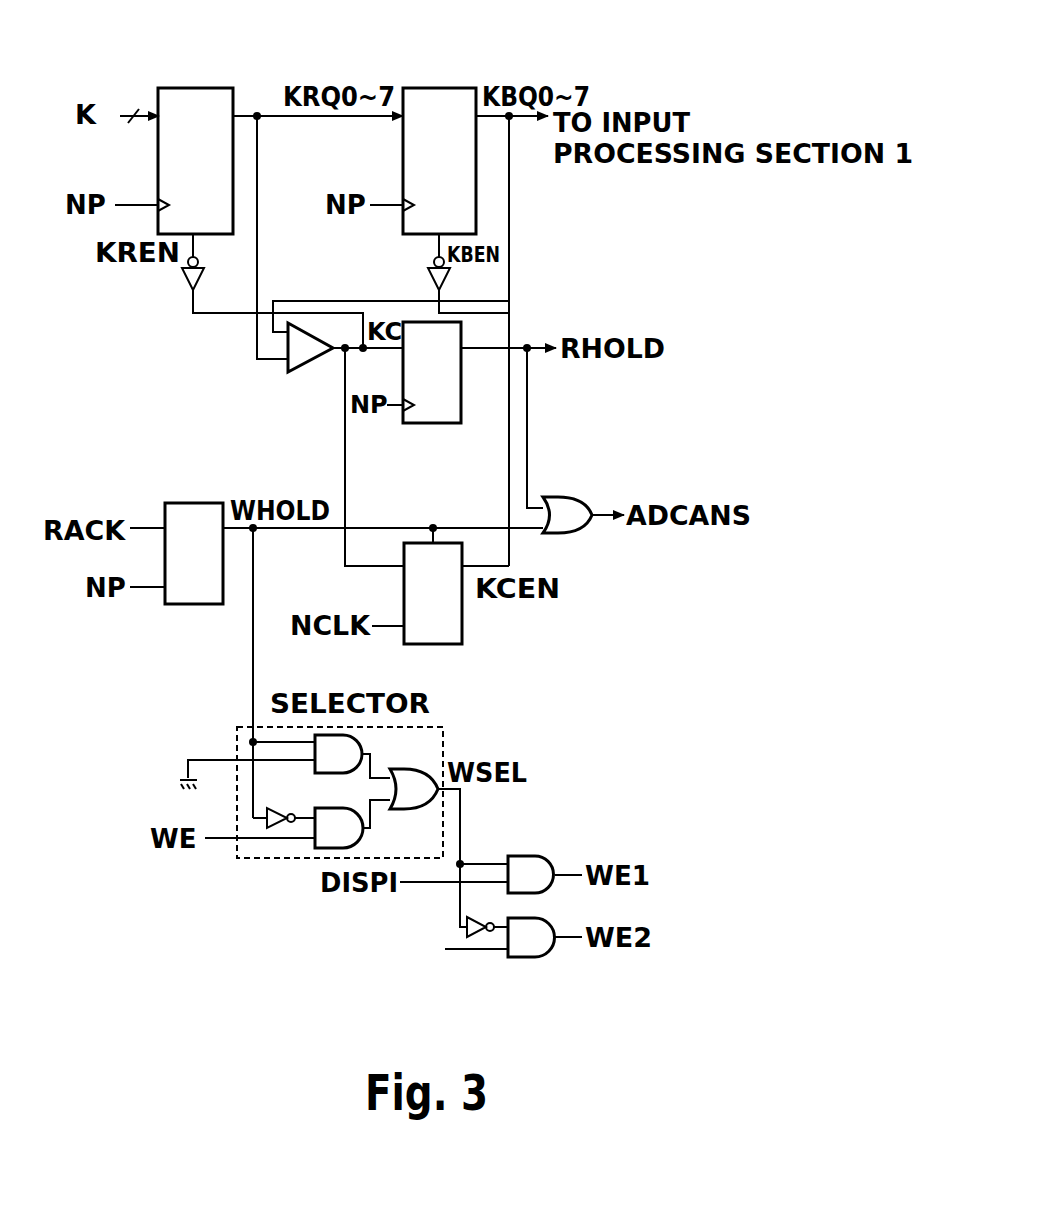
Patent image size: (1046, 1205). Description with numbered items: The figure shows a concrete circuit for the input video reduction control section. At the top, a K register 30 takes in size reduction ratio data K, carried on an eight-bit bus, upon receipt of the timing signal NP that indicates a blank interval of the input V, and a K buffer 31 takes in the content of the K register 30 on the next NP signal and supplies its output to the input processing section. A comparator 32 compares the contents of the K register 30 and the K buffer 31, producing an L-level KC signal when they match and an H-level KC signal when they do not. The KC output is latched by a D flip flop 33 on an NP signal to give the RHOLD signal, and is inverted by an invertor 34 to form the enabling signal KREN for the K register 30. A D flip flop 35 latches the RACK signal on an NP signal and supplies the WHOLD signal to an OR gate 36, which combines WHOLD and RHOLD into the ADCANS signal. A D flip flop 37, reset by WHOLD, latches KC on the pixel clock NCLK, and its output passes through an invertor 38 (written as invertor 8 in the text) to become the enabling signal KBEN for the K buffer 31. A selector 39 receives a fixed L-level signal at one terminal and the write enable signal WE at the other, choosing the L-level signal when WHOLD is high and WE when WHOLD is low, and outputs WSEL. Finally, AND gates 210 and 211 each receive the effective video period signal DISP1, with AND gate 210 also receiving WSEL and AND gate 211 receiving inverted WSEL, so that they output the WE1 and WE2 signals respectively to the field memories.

The invertor 8 is at (139, 101).
The K register 30 is at (218, 86).
The K buffer 31 is at (460, 86).
The comparator 32 is at (298, 373).
The D flip flop 33 is at (450, 425).
The invertor 34 is at (185, 280).
The D flip flop 35 is at (205, 605).
The OR gate 36 is at (562, 505).
The D flip flop 37 is at (462, 632).
The invertor 38 is at (450, 278).
The selector 39 is at (422, 735).
The AND gate 210 is at (525, 865).
The AND gate 211 is at (530, 947).